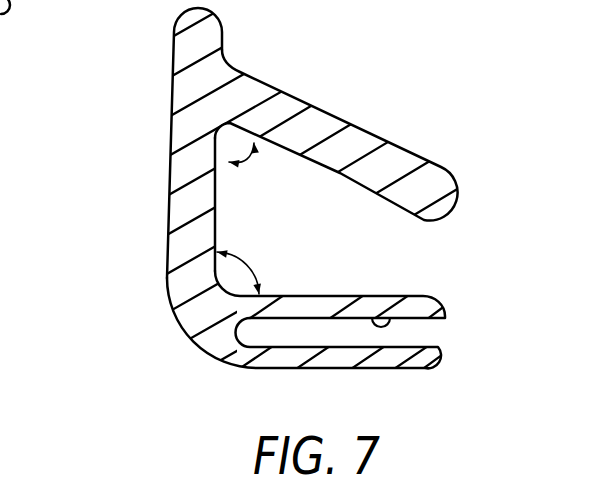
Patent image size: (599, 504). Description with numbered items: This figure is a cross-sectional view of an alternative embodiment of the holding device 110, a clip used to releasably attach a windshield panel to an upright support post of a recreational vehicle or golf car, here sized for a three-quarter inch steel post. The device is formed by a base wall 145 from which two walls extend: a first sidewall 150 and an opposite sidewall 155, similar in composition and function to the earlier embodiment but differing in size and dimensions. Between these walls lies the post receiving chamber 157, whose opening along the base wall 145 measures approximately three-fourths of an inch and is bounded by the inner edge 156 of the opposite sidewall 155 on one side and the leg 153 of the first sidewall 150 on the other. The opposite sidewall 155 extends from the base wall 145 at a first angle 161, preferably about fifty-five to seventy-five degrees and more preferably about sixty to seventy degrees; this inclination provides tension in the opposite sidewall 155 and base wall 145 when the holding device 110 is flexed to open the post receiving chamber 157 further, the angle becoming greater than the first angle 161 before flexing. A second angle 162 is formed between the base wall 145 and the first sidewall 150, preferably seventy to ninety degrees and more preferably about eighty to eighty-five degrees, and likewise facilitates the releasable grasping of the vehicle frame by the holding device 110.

The holding device 110 is at (130, 280).
The base wall 145 is at (168, 209).
The first sidewall 150 is at (277, 368).
The leg 153 is at (423, 296).
The opposite sidewall 155 is at (334, 114).
The inner edge 156 is at (393, 293).
The post receiving chamber 157 is at (321, 218).
The first angle 161 is at (258, 166).
The second angle 162 is at (252, 262).